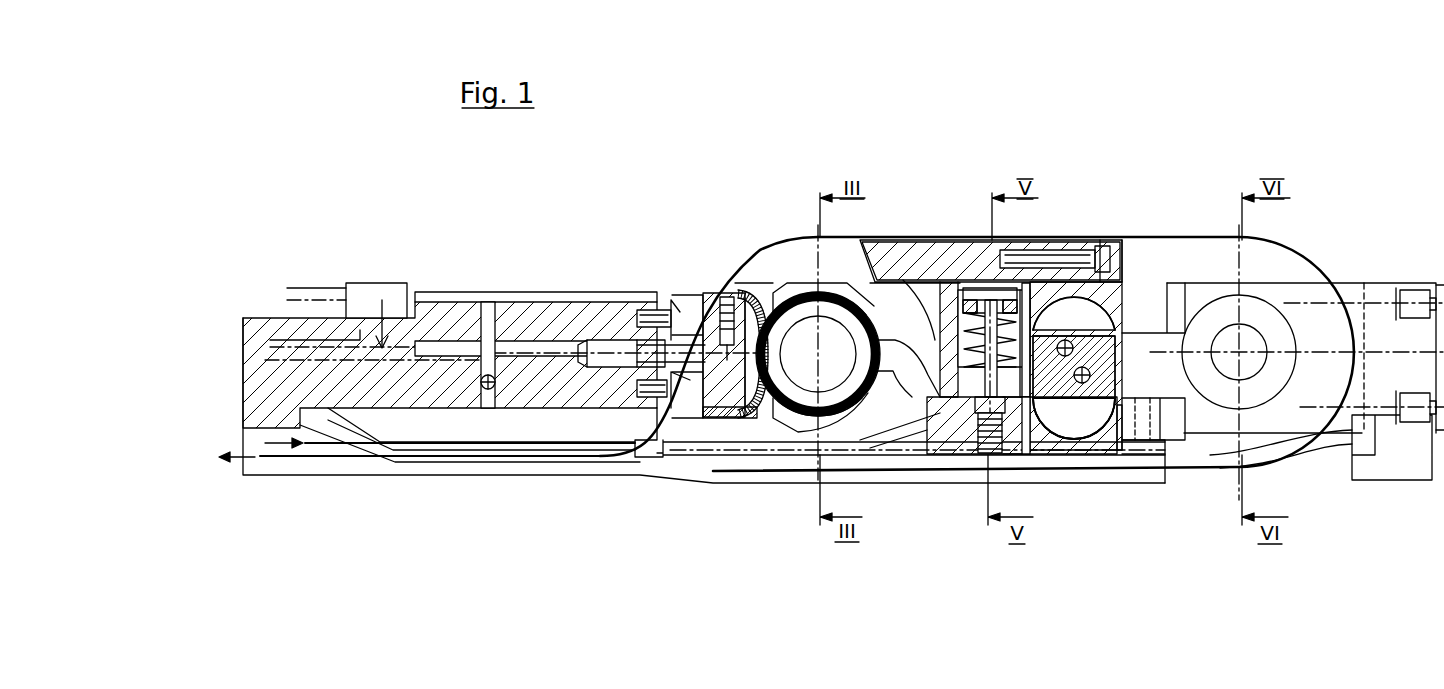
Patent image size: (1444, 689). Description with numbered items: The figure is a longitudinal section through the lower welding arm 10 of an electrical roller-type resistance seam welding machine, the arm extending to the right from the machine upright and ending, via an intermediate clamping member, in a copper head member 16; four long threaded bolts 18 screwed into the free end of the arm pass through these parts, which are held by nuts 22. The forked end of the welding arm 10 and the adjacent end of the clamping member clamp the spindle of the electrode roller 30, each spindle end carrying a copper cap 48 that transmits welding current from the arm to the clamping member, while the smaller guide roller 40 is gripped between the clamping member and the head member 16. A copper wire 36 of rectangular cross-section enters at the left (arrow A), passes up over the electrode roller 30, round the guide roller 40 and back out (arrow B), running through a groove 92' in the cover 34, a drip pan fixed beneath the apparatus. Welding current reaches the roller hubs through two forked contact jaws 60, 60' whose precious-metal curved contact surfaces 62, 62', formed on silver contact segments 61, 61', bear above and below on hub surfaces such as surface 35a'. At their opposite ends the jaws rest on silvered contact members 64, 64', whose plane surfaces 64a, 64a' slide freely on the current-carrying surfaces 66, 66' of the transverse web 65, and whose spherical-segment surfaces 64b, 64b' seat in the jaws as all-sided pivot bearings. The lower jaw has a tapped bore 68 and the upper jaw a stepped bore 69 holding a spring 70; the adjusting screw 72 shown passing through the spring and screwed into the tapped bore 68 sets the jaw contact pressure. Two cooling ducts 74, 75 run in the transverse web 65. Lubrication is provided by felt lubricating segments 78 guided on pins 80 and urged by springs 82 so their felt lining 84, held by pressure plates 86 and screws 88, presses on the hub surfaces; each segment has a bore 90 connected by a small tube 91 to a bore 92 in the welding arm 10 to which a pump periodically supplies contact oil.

The welding arm 10 is at (303, 320).
The head member 16 is at (1348, 283).
The threaded bolts 18 is at (1441, 292).
The nuts 22 is at (1412, 292).
The electrode roller 30 is at (780, 243).
The cover 34 is at (1140, 470).
The generated surface of hub 35a' is at (740, 304).
The copper wire 36 is at (1232, 238).
The guide roller 40 is at (1280, 270).
The cap 48 is at (830, 373).
The contact jaw 60 is at (1044, 271).
The contact jaw 60' is at (1041, 490).
The silver contact segment 61 is at (991, 271).
The silver contact segment 61' is at (903, 493).
The curved contact surface 62 is at (835, 313).
The curved contact surface 62' is at (811, 461).
The contact member 64 is at (1093, 298).
The contact member 64' is at (1031, 490).
The plane surface 64a is at (1129, 259).
The plane surface 64a' is at (1142, 490).
The spherical segment surface 64b is at (1169, 214).
The spherical segment surface 64b' is at (1153, 494).
The transverse web 65 is at (1083, 250).
The current-carrying surface 66 is at (1102, 214).
The current-carrying surface 66' is at (1050, 490).
The tapped bore 68 is at (990, 456).
The stepped bore 69 is at (945, 282).
The spring 70 is at (978, 300).
The adjusting bolt 72 is at (990, 290).
The cooling duct 74 is at (1092, 376).
The cooling duct 75 is at (1075, 350).
The felt lubricating segment 78 is at (700, 330).
The pins 80 is at (640, 314).
The springs 82 is at (660, 330).
The felt lining 84 is at (732, 420).
The pressure plates 86 is at (756, 300).
The screws 88 is at (710, 300).
The bore 90 is at (692, 425).
The small tube 91 is at (620, 353).
The bore 92 is at (400, 297).
The groove 92' is at (1161, 398).
The arrow A is at (280, 447).
The arrow B is at (232, 463).